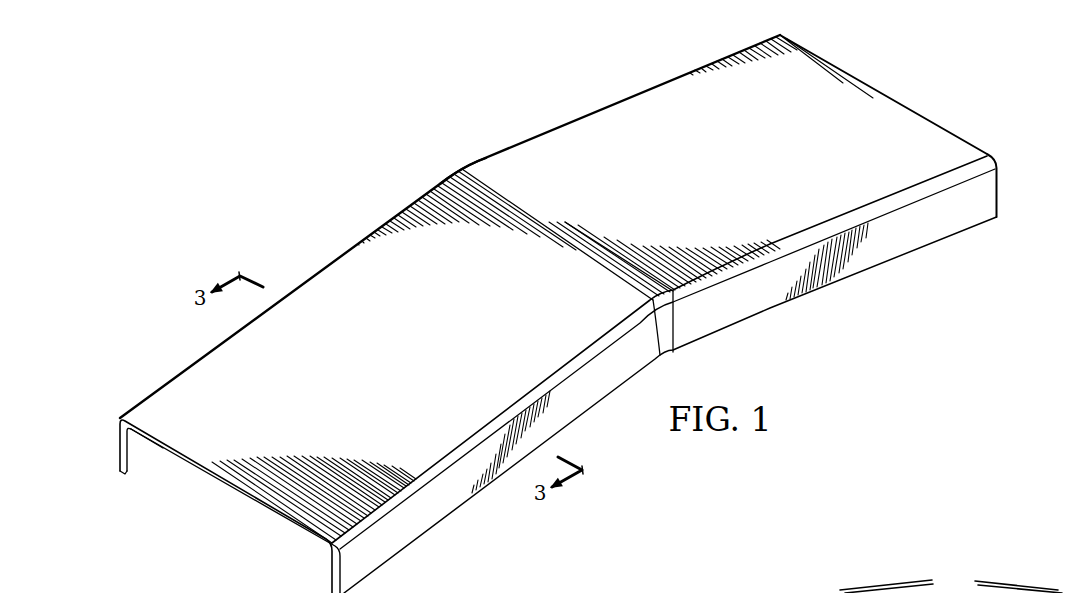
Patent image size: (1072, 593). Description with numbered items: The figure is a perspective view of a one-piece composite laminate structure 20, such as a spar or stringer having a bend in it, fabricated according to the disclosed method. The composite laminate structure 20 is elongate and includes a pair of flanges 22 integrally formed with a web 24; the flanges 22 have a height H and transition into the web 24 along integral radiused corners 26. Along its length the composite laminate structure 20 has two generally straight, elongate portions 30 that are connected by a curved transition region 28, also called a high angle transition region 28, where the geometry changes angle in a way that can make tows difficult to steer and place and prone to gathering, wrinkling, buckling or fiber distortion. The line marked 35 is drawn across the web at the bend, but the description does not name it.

In FIG. 1, the composite laminate structure 20 is at (583, 314).
In FIG. 1, the flanges 22 is at (988, 190).
In FIG. 1, the web 24 is at (602, 125).
In FIG. 1, the radiused corners 26 is at (865, 194).
In FIG. 1, the curved transition region 28 is at (443, 158).
In FIG. 2, the curved transition region 28 is at (970, 583).
In FIG. 1, the fold line (crease) 35 is at (581, 223).
In FIG. 2, the straight elongate portions 30 is at (844, 582).